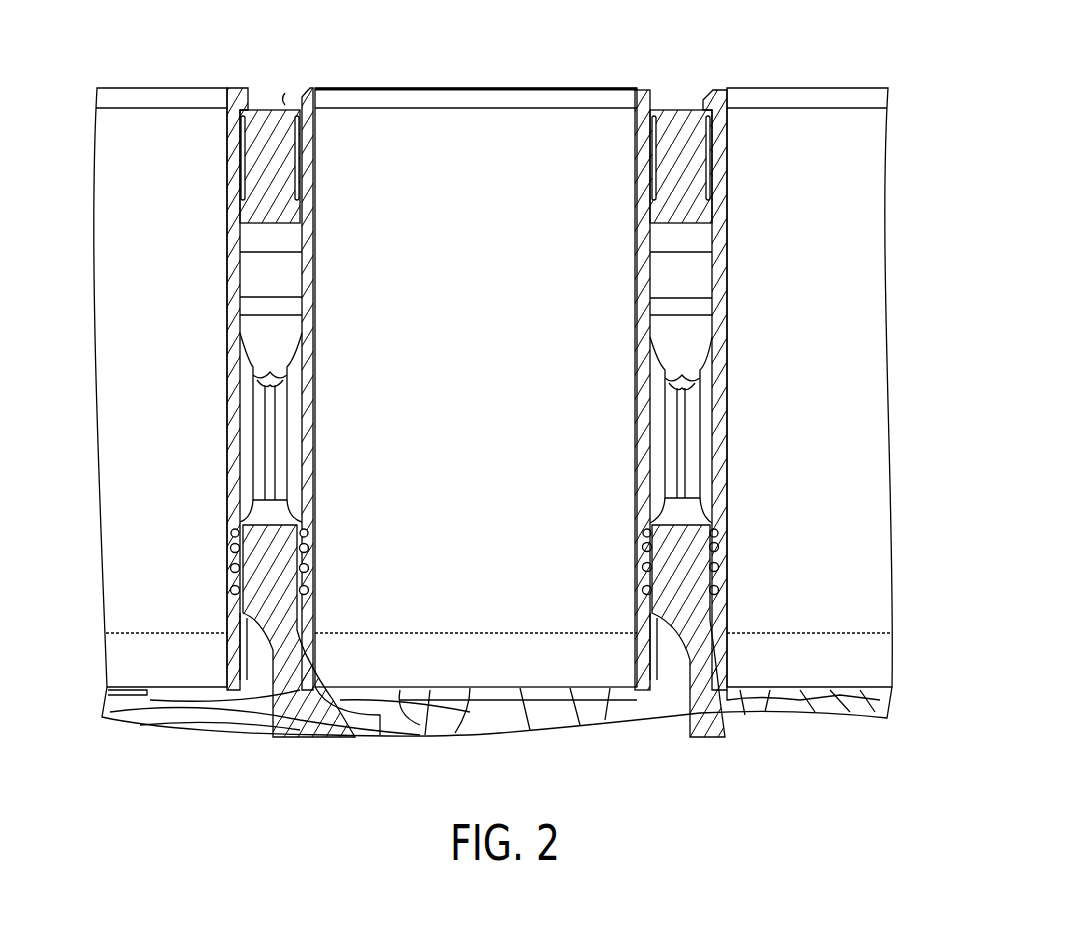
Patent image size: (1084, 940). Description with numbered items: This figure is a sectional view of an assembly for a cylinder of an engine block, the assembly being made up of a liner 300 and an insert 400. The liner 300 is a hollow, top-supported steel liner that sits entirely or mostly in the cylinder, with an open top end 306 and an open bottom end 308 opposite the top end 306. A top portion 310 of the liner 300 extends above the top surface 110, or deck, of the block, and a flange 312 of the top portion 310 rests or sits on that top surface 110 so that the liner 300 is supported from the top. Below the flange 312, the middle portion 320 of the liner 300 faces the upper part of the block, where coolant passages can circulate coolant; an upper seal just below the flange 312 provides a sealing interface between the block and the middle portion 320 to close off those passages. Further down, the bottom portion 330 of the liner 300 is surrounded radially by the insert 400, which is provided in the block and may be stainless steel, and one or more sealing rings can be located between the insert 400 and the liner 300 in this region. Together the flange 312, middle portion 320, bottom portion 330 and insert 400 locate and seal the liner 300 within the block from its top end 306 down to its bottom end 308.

The top surface 110 is at (681, 108).
The liner 300 is at (445, 120).
The top end 306 is at (510, 87).
The bottom end 308 is at (392, 688).
The top portion 310 is at (278, 96).
The flange 312 is at (293, 102).
The middle portion 320 is at (627, 110).
The bottom portion 330 is at (627, 500).
The insert 400 is at (238, 578).